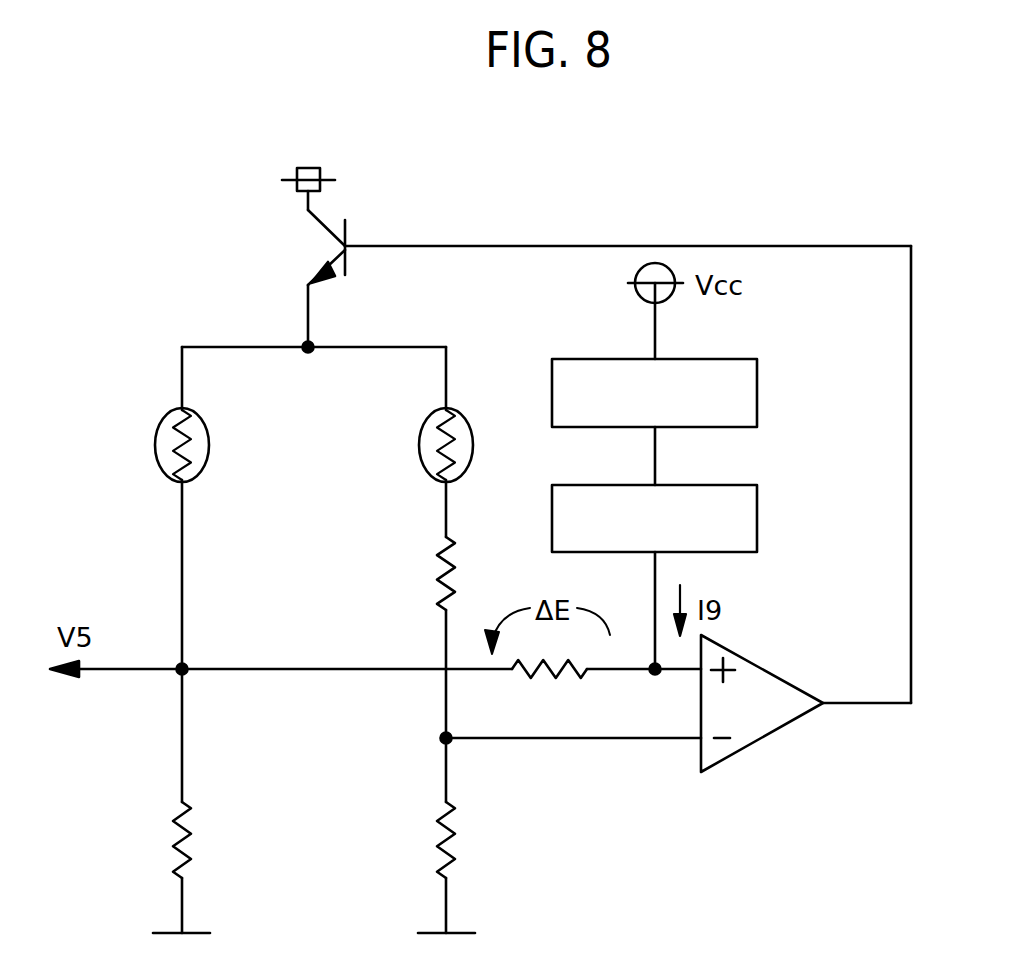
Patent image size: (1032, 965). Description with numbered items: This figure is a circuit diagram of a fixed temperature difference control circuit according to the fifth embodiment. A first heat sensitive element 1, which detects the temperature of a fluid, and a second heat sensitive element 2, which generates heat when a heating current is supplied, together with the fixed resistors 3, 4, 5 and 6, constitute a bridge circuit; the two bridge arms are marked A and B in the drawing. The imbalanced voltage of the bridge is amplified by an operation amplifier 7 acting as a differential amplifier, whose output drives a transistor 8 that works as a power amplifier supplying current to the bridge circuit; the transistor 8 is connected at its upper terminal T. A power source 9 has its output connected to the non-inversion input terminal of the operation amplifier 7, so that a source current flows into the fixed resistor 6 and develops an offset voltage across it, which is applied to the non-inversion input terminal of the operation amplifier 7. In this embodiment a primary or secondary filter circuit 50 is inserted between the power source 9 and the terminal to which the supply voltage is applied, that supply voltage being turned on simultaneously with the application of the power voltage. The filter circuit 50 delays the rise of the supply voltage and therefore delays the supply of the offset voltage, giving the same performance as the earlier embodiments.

The first heat sensitive element 1 is at (420, 432).
The second heat sensitive element 2 is at (155, 432).
The fixed resistor 3 is at (440, 580).
The fixed resistor 4 is at (436, 848).
The fixed resistor 5 is at (172, 848).
The fixed resistor 6 is at (553, 678).
The operation amplifier 7 is at (742, 752).
The transistor 8 is at (348, 232).
The power source 9 is at (757, 516).
The filter circuit 50 is at (757, 389).
The bridge arm A is at (483, 386).
The bridge arm B is at (245, 576).
The transistor terminal T is at (303, 193).